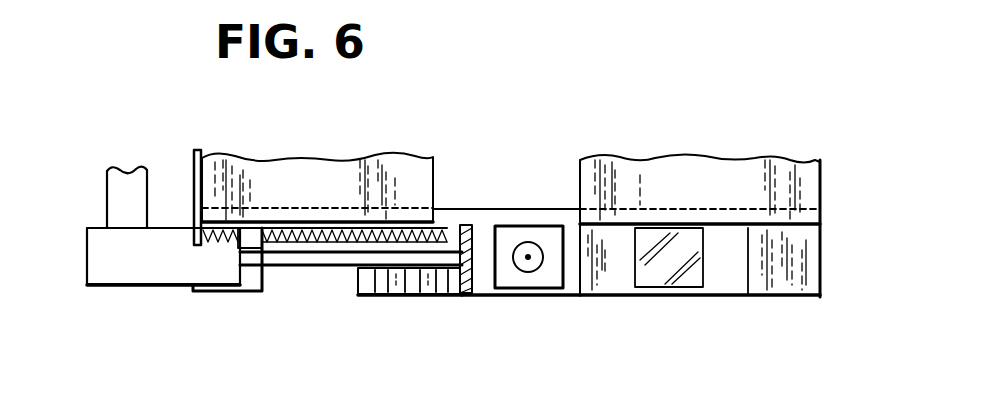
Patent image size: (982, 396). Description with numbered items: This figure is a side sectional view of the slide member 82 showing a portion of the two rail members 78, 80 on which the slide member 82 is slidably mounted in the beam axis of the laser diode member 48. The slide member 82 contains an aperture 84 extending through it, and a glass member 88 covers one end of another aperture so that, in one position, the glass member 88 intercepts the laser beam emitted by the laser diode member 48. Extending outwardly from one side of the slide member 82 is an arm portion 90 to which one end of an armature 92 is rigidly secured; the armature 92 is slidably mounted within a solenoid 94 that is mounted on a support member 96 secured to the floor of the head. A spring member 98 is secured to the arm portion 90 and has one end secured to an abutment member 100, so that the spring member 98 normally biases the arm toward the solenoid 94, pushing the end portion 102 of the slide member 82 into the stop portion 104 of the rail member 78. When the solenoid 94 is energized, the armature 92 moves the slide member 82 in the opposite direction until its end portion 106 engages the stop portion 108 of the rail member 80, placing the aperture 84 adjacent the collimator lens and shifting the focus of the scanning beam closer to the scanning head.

The laser diode member 48 is at (540, 270).
The rail member 78 is at (407, 167).
The rail member 80 is at (803, 162).
The slide member 82 is at (613, 297).
The aperture 84 is at (558, 243).
The glass member 88 is at (687, 240).
The arm portion 90 is at (473, 272).
The armature 92 is at (327, 268).
The solenoid 94 is at (105, 287).
The support member 96 is at (117, 190).
The spring member 98 is at (327, 222).
The abutment member 100 is at (197, 150).
The end portion 102 is at (380, 280).
The stop portion 104 is at (252, 282).
The end portion 106 is at (725, 257).
The stop portion 108 is at (812, 247).